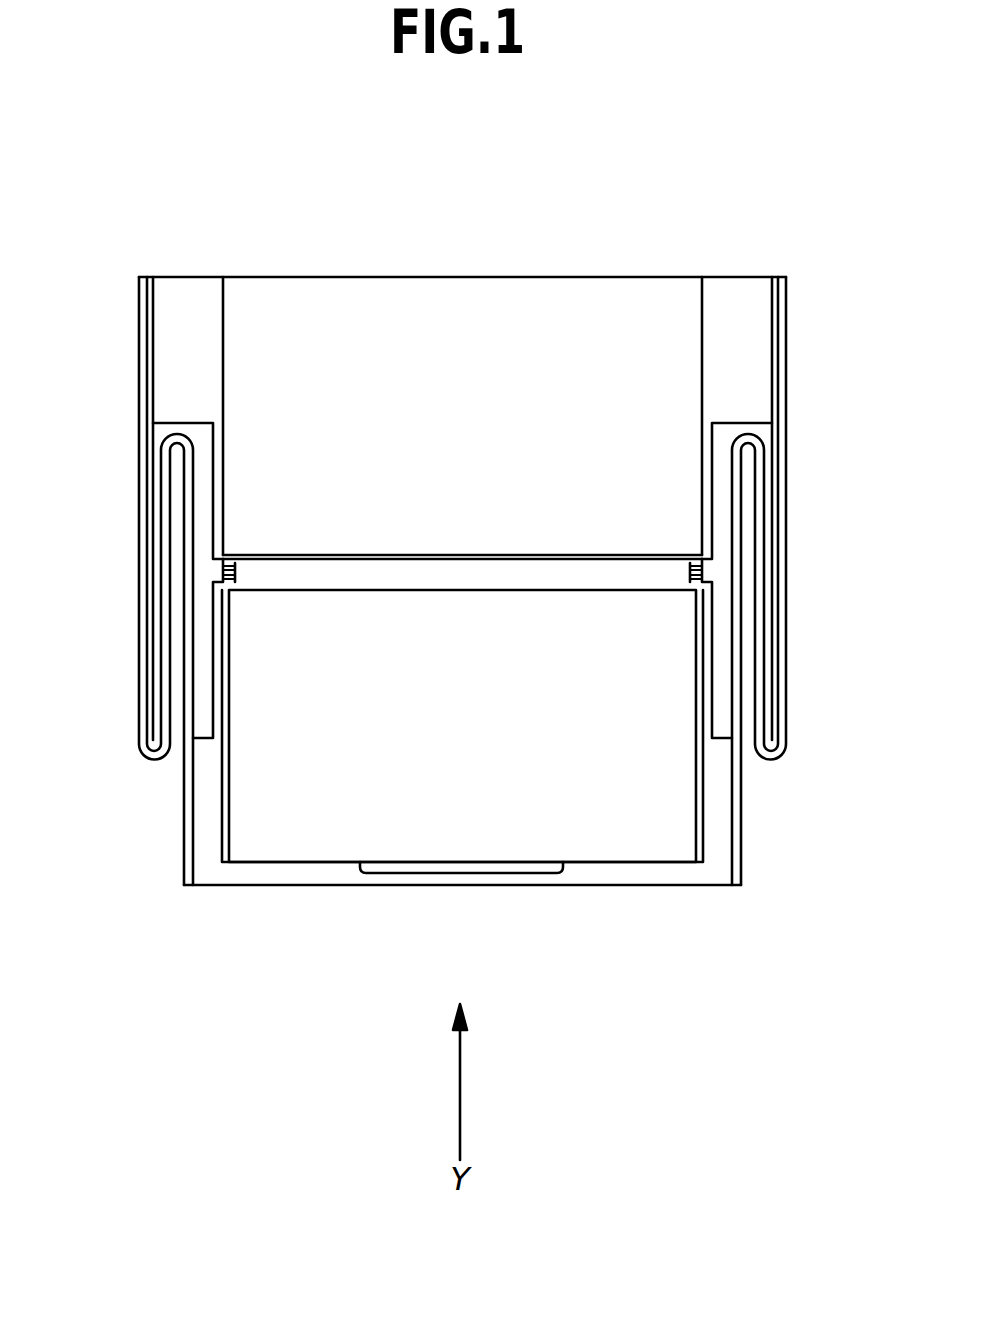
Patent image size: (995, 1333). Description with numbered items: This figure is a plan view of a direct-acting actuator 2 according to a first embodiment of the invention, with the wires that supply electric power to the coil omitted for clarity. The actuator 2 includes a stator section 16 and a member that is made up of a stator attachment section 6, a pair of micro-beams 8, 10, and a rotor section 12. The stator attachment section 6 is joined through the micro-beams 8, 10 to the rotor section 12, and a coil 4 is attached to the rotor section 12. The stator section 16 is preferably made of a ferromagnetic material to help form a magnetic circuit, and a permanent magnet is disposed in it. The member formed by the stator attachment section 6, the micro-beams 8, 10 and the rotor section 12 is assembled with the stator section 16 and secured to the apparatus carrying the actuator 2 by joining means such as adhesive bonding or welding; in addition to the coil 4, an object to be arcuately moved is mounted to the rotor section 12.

The direct-acting actuator 2 is at (658, 266).
The coil 4 is at (493, 866).
The stator attachment section 6 is at (185, 306).
The micro-beam 8 is at (787, 744).
The micro-beam 10 is at (138, 712).
The rotor section 12 is at (608, 873).
The stator section 16 is at (318, 797).